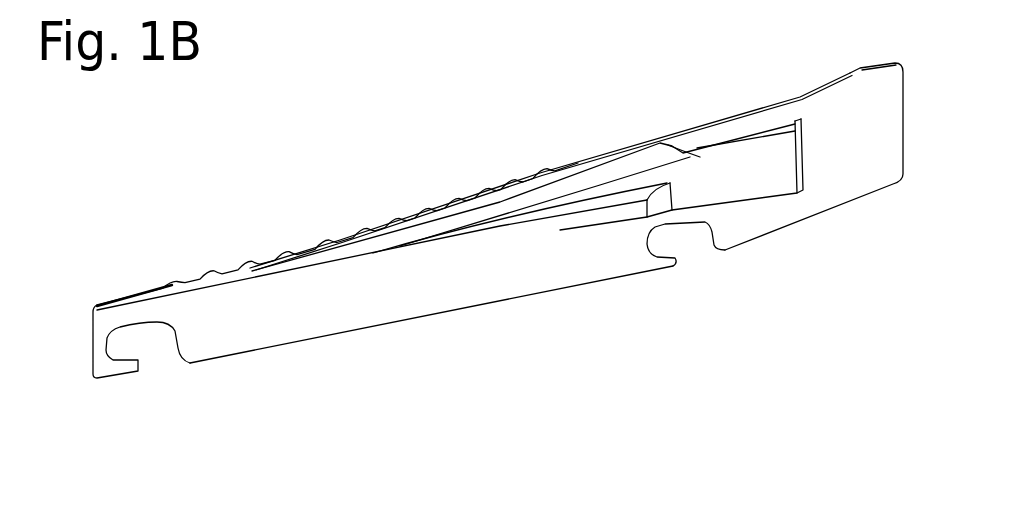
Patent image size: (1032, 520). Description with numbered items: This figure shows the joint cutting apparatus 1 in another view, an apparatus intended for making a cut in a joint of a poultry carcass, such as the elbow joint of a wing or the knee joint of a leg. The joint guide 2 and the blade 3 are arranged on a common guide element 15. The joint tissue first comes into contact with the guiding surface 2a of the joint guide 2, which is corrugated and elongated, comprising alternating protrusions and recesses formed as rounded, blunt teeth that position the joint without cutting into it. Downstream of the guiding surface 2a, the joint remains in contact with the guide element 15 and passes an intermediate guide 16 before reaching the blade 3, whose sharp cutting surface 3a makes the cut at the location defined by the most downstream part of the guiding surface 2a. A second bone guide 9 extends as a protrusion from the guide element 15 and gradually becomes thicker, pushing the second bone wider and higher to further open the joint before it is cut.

The joint cutting apparatus 1 is at (373, 122).
The joint guide 2 is at (204, 238).
The guiding surface 2a is at (323, 244).
The blade 3 is at (784, 100).
The cutting surface 3a is at (736, 117).
The second bone guide 9 is at (600, 226).
The guide element 15 is at (473, 278).
The intermediate guide 16 is at (629, 143).